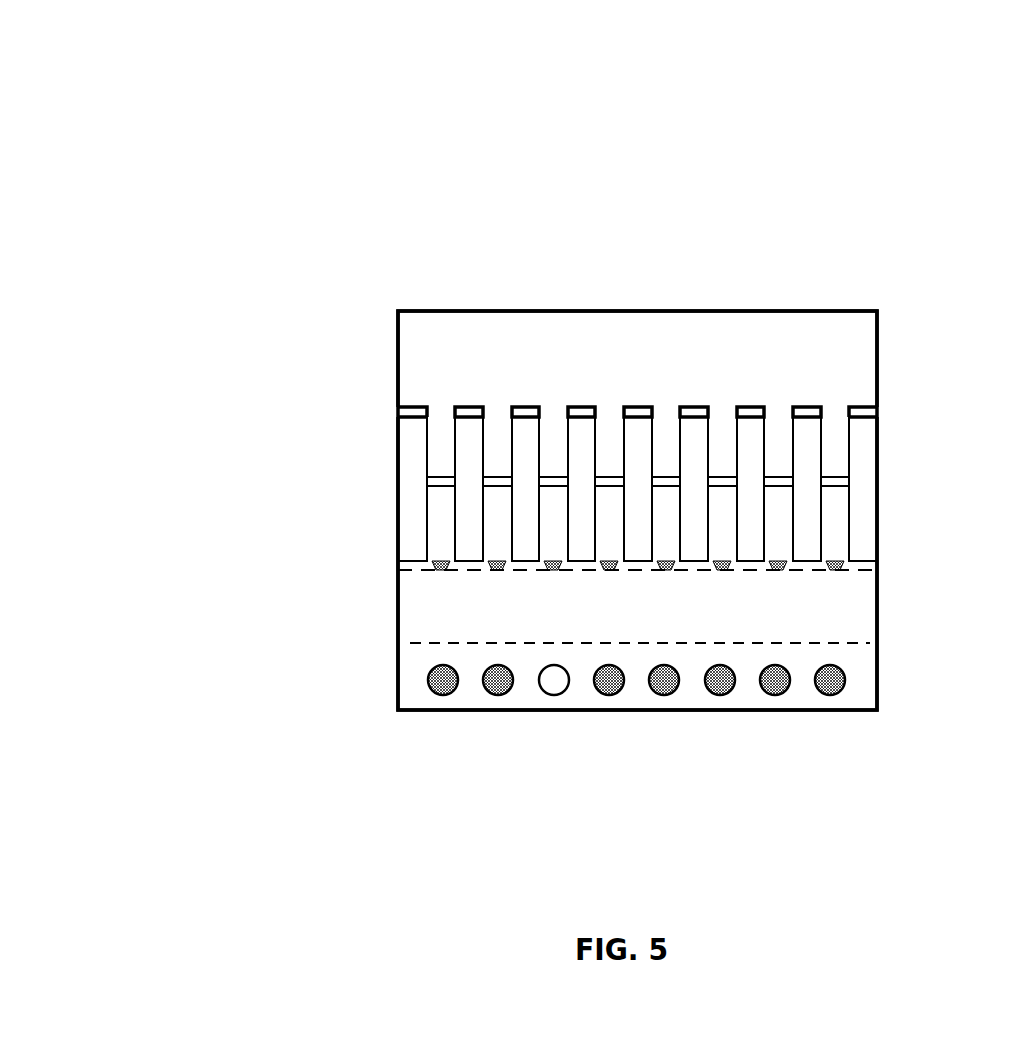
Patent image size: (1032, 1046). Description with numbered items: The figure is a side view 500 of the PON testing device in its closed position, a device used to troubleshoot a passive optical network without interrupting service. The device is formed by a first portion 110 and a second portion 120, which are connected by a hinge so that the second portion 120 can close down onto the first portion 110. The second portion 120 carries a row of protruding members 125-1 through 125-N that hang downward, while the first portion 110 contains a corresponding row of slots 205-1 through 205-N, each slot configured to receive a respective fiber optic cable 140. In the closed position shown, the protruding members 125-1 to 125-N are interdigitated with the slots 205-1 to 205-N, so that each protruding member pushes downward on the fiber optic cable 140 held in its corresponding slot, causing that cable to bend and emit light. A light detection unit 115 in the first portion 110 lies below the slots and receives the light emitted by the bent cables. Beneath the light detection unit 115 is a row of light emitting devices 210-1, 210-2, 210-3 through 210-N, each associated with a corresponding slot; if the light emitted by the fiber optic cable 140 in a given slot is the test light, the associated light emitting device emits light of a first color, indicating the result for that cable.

The side view 500 is at (130, 65).
The second portion 120 is at (424, 290).
The first portion 110 is at (404, 729).
The protruding member 125-1 is at (437, 448).
The protruding member 125-N is at (828, 445).
The slot 205-1 is at (430, 519).
The slot 205-N is at (850, 522).
The fiber optic cable 140 is at (497, 567).
The light detection unit 115 is at (860, 622).
The light emitting device 210-1 is at (445, 695).
The light emitting device 210-2 is at (495, 695).
The light emitting device 210-3 is at (552, 695).
The light emitting device 210-N is at (831, 695).